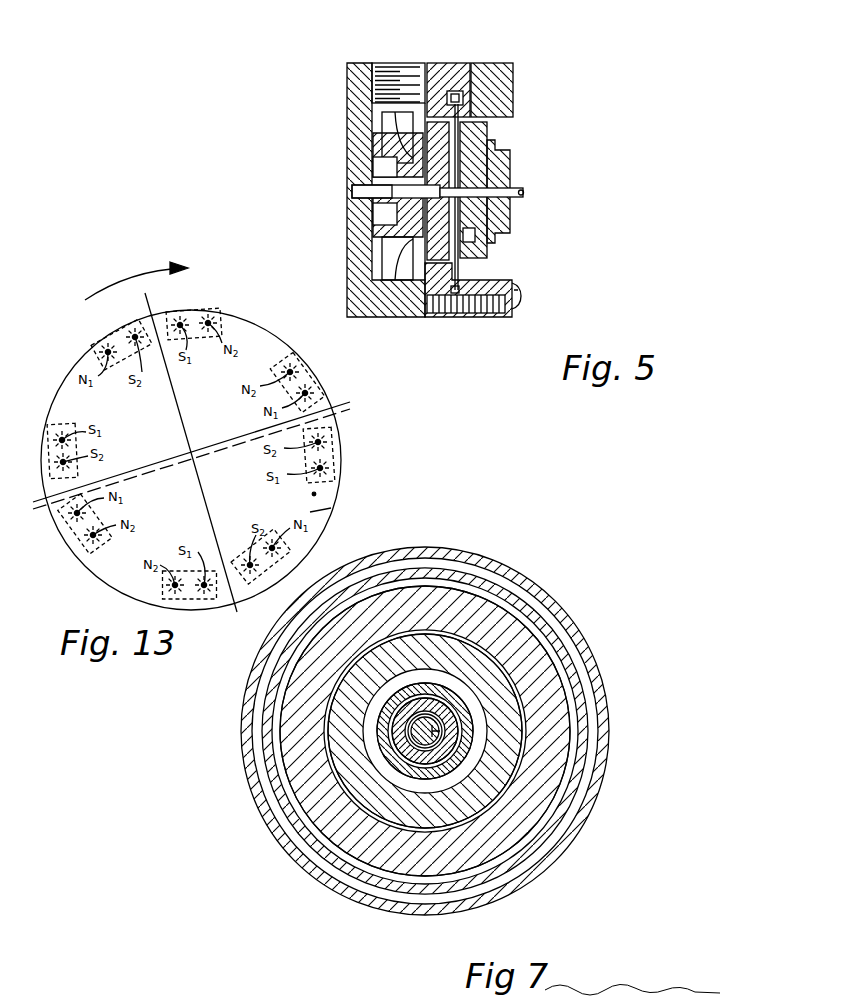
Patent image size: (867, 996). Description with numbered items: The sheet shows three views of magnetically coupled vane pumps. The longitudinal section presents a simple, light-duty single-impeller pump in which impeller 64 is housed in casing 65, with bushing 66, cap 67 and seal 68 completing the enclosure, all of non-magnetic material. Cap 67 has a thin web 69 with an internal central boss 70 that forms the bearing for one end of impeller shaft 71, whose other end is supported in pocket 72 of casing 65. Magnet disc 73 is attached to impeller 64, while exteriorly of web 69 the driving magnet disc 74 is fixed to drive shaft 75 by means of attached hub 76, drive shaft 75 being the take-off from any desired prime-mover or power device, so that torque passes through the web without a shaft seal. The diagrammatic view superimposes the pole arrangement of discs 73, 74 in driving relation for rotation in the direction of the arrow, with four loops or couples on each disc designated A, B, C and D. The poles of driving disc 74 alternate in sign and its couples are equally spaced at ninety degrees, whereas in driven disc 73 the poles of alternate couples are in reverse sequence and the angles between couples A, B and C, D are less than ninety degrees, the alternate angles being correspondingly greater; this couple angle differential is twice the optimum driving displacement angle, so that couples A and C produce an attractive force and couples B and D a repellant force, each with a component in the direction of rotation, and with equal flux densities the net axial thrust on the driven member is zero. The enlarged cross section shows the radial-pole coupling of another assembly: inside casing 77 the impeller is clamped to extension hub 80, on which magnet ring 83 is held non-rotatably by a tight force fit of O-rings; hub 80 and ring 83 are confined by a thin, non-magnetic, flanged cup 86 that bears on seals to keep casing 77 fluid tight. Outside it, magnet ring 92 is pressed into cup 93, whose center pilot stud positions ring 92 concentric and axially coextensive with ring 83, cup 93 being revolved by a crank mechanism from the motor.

In FIG. 5, the impeller 64 is at (432, 152).
In FIG. 5, the casing 65 is at (352, 95).
In FIG. 5, the bushing 66 is at (467, 83).
In FIG. 5, the cap 67 is at (447, 113).
In FIG. 5, the seal 68 is at (465, 283).
In FIG. 5, the thin web 69 is at (460, 250).
In FIG. 5, the central boss 70 is at (470, 235).
In FIG. 5, the impeller shaft 71 is at (372, 196).
In FIG. 5, the pocket 72 is at (355, 187).
In FIG. 5, the magnet disc 73 is at (438, 150).
In FIG. 13, the magnet disc 73 is at (330, 508).
In FIG. 5, the magnet disc 74 is at (470, 175).
In FIG. 13, the magnet disc 74 is at (314, 494).
In FIG. 5, the drive shaft 75 is at (508, 193).
In FIG. 5, the hub 76 is at (500, 223).
In FIG. 7, the casing 77 is at (533, 586).
In FIG. 7, the extension hub 80 is at (468, 722).
In FIG. 7, the magnet ring 83 is at (507, 773).
In FIG. 7, the flanged cup 86 is at (525, 740).
In FIG. 7, the magnet ring 92 is at (543, 667).
In FIG. 7, the cup 93 is at (537, 618).
In FIG. 13, the couple A is at (151, 325).
In FIG. 13, the couple B is at (351, 404).
In FIG. 13, the couple C is at (237, 606).
In FIG. 13, the couple D is at (72, 492).